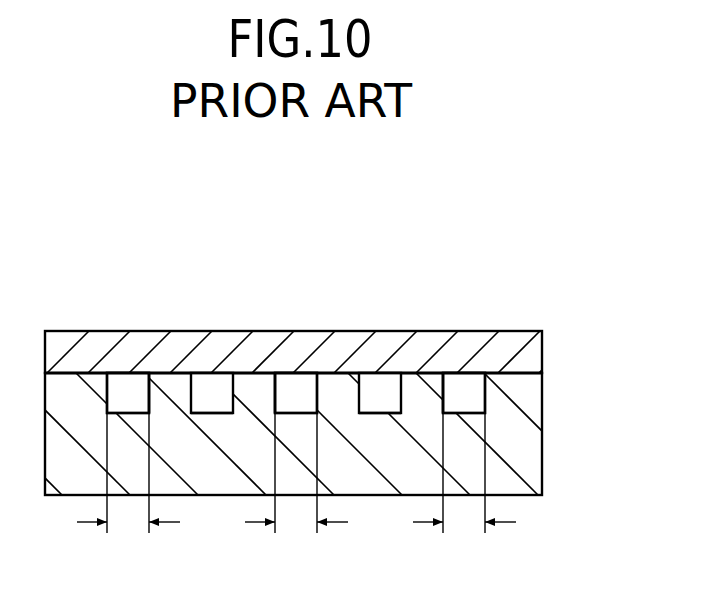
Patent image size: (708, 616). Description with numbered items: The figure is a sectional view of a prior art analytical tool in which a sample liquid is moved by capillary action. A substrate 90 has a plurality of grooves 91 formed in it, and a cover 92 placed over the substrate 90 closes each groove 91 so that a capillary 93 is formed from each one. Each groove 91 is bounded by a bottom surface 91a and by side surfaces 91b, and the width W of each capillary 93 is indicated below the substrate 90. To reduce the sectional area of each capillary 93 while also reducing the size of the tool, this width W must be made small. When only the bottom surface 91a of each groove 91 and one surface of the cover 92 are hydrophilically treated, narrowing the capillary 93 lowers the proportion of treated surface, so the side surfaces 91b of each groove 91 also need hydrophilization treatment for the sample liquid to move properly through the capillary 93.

The substrate 90 is at (544, 453).
The groove 91 is at (200, 394).
The bottom surface 91a is at (148, 376).
The side surfaces 91b is at (226, 413).
The cover 92 is at (518, 332).
The capillary 93 is at (128, 394).
The groove width W is at (296, 493).